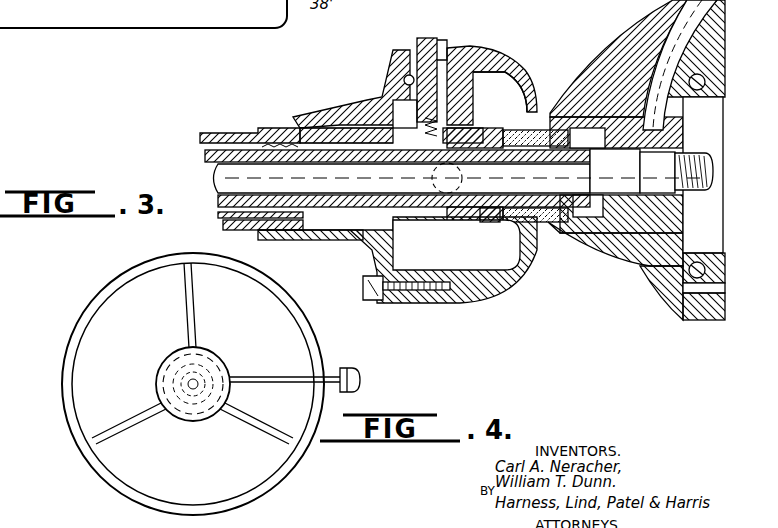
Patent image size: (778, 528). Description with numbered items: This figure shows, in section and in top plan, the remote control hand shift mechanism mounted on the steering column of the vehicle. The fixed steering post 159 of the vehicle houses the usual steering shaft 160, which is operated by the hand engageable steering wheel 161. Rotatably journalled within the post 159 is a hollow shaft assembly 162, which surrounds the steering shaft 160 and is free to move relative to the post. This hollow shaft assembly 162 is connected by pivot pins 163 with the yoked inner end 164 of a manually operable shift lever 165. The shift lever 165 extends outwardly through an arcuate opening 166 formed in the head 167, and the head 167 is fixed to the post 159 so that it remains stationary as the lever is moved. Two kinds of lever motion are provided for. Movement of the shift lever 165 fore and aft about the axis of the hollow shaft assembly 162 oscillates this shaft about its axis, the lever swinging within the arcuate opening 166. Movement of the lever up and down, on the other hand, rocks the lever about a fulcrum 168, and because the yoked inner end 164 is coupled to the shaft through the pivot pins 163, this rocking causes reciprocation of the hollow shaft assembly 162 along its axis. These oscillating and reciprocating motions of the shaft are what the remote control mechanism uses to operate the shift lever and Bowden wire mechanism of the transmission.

In FIG. 3, the fixed steering post 159 is at (246, 117).
In FIG. 3, the steering shaft 160 is at (592, 171).
In FIG. 3, the steering wheel 161 is at (670, 38).
In FIG. 4, the steering wheel 161 is at (287, 298).
In FIG. 3, the hollow shaft assembly 162 is at (294, 153).
In FIG. 3, the pivot pins 163 is at (462, 179).
In FIG. 3, the yoked inner end 164 is at (432, 176).
In FIG. 4, the yoked inner end 164 is at (208, 350).
In FIG. 3, the shift lever 165 is at (438, 56).
In FIG. 4, the shift lever 165 is at (297, 380).
In FIG. 3, the arcuate opening 166 is at (410, 50).
In FIG. 3, the head 167 is at (487, 62).
In FIG. 3, the fulcrum 168 is at (497, 92).